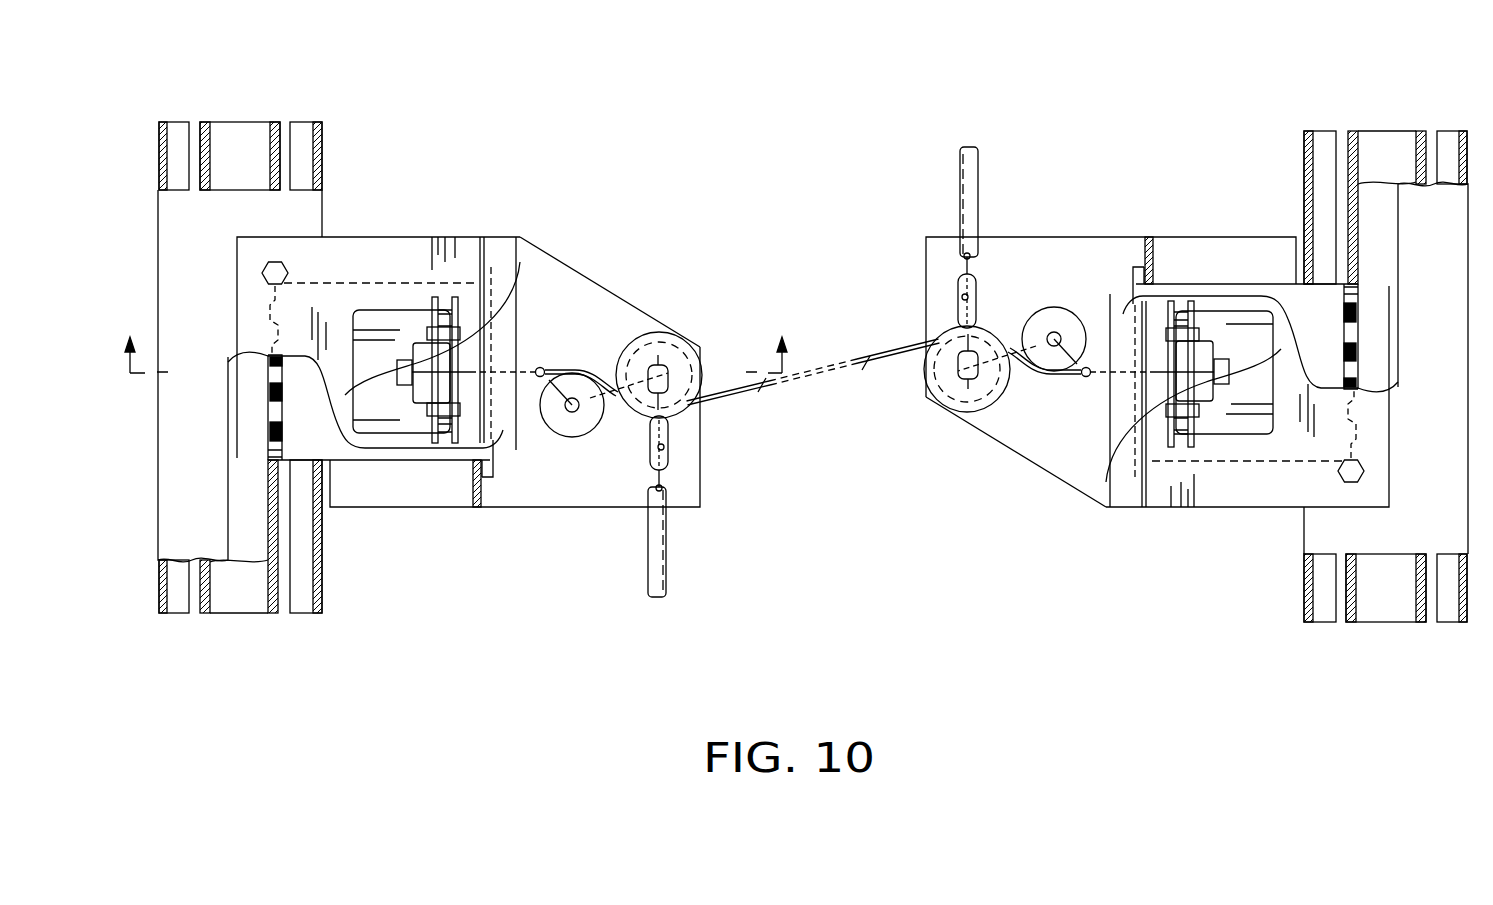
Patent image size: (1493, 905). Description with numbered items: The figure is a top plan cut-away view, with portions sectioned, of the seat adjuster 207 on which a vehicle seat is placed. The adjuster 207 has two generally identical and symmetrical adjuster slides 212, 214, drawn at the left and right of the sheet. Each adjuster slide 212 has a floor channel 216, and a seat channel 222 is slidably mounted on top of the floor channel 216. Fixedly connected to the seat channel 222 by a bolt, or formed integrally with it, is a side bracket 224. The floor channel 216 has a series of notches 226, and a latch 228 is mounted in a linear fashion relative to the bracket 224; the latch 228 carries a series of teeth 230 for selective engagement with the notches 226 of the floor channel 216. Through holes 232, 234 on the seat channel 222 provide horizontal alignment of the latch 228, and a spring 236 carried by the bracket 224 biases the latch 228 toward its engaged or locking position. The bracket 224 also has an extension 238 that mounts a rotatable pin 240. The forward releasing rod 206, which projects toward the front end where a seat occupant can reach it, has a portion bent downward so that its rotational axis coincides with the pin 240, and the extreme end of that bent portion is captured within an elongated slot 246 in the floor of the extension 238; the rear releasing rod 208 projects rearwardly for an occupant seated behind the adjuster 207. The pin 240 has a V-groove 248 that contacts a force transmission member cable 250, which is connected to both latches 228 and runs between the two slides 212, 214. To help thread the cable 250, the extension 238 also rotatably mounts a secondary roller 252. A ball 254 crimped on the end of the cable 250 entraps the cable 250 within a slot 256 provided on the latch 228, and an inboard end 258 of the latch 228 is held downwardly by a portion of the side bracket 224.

The forward releasing rod 206 is at (638, 568).
The seat adjuster 207 is at (789, 122).
The rear releasing rod 208 is at (950, 172).
The adjuster slide 212 is at (237, 116).
The adjuster slide 214 is at (1395, 624).
The floor channel 216 is at (203, 122).
The seat channel 222 is at (318, 122).
The side bracket 224 is at (358, 226).
The notches 226 is at (268, 385).
The latch 228 is at (377, 466).
The teeth 230 is at (268, 448).
The through hole 232 is at (282, 455).
The through hole 234 is at (348, 458).
The spring 236 is at (515, 290).
The extension 238 is at (587, 274).
The rotatable pin 240 is at (634, 326).
The elongated slot 246 is at (665, 460).
The V-groove 248 is at (676, 340).
The cable 250 is at (760, 383).
The secondary roller 252 is at (585, 418).
The ball 254 is at (400, 370).
The slot 256 is at (412, 392).
The inboard end 258 is at (495, 462).